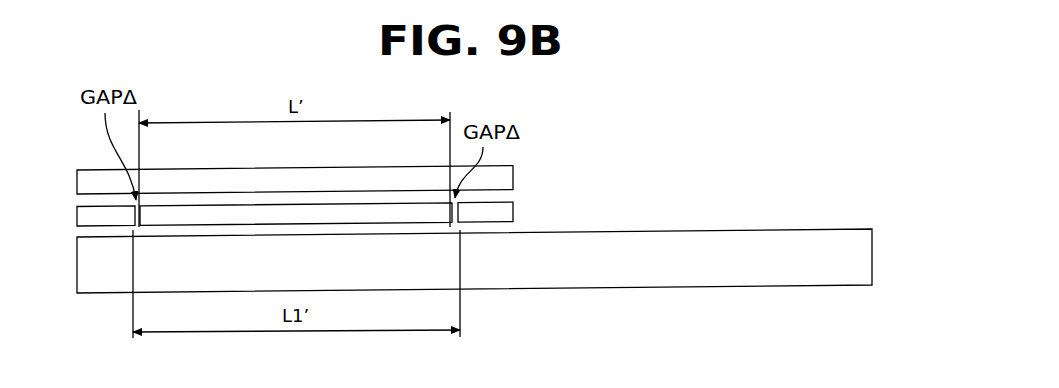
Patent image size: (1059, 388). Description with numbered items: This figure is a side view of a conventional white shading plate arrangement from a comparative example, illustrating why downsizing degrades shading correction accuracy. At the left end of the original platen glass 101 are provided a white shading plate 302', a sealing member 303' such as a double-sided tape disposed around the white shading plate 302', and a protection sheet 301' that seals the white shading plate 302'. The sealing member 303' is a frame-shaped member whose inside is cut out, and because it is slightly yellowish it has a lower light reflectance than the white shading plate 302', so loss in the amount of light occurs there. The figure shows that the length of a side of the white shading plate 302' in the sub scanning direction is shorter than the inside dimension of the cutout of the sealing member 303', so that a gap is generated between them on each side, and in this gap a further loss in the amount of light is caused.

The protection sheet 301' is at (336, 180).
The white shading plate 302' is at (296, 179).
The sealing member 303' is at (336, 214).
The original platen glass 101 is at (762, 230).